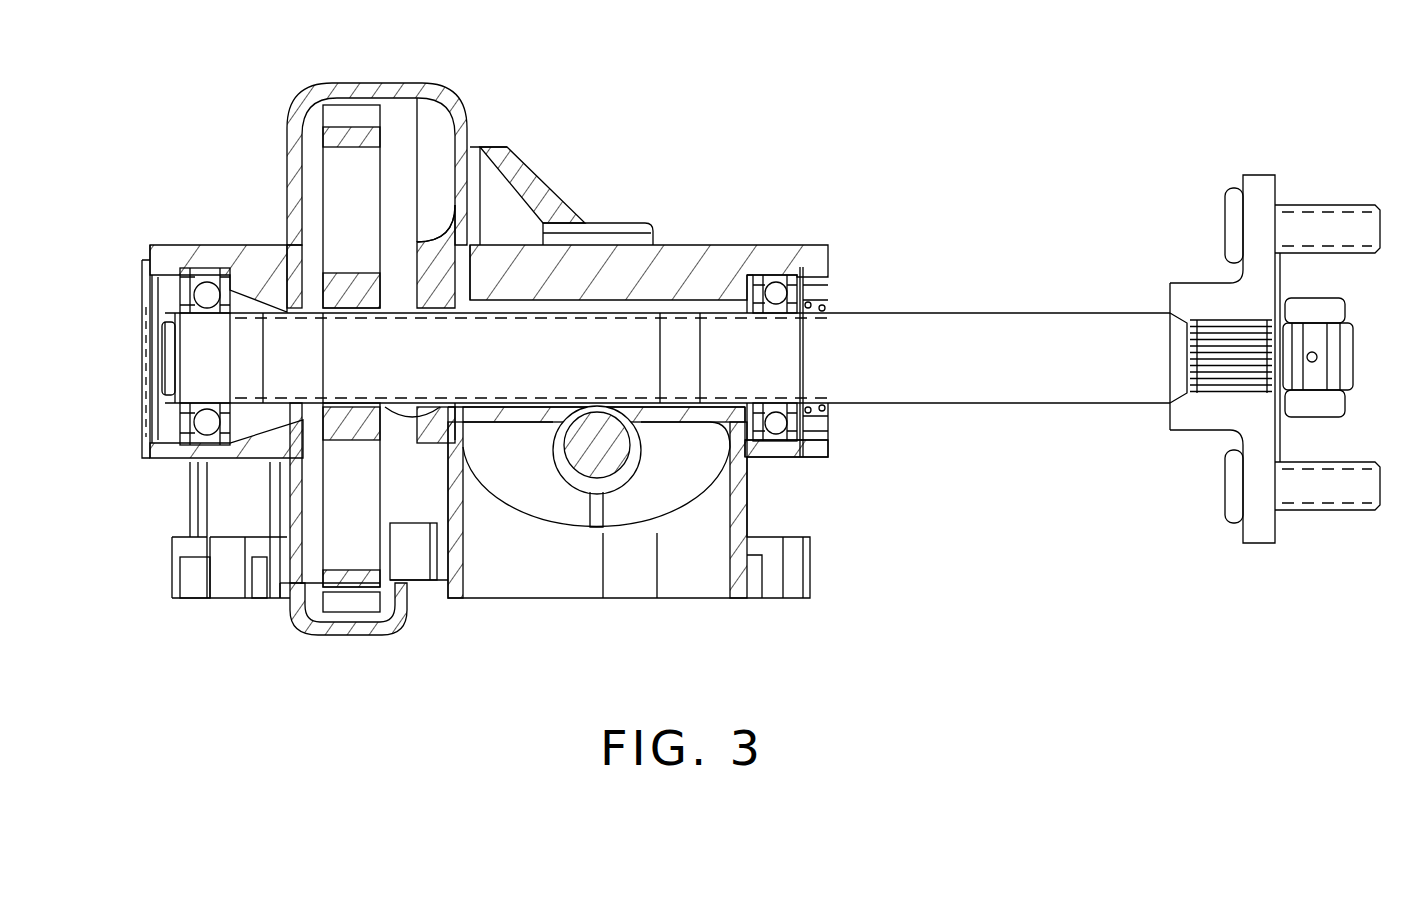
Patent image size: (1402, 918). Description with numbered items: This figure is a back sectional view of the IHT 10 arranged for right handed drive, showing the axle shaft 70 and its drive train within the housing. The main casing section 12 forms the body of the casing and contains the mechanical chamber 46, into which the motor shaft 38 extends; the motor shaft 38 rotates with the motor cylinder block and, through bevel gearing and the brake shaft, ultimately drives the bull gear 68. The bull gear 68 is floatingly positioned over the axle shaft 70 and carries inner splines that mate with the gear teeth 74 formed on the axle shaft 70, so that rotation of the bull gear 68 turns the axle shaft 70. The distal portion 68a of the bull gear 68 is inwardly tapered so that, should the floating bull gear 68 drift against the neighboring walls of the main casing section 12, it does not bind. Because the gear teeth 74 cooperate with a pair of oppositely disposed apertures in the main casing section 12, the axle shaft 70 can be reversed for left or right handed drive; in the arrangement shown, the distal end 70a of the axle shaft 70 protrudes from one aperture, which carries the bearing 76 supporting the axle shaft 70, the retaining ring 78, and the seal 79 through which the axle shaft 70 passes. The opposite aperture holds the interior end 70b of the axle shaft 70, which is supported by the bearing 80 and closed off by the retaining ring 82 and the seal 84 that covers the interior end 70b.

The IHT 10 is at (853, 134).
The main casing section 12 is at (458, 108).
The motor shaft 38 is at (597, 458).
The mechanical chamber 46 is at (433, 483).
The bull gear 68 is at (360, 287).
The distal portion of the bull gear 68a is at (377, 603).
The axle shaft 70 is at (603, 343).
The distal end of the axle shaft 70a is at (1067, 322).
The interior end of the axle shaft 70b is at (208, 370).
The gear teeth 74 is at (528, 305).
The bearing 76 is at (776, 288).
The retaining ring 78 is at (817, 296).
The seal 79 is at (815, 422).
The bearing 80 is at (210, 292).
The retaining ring 82 is at (170, 310).
The seal 84 is at (158, 363).